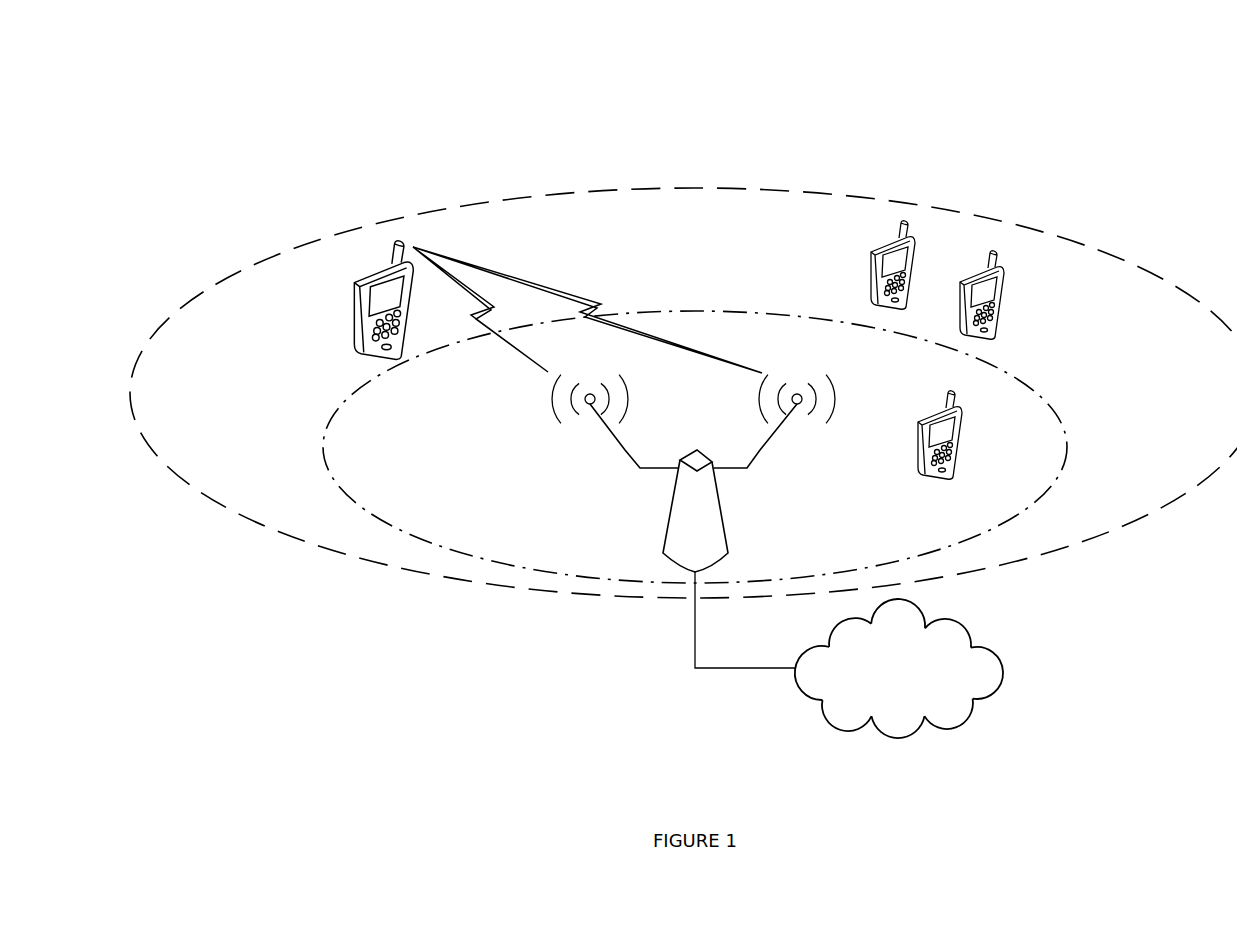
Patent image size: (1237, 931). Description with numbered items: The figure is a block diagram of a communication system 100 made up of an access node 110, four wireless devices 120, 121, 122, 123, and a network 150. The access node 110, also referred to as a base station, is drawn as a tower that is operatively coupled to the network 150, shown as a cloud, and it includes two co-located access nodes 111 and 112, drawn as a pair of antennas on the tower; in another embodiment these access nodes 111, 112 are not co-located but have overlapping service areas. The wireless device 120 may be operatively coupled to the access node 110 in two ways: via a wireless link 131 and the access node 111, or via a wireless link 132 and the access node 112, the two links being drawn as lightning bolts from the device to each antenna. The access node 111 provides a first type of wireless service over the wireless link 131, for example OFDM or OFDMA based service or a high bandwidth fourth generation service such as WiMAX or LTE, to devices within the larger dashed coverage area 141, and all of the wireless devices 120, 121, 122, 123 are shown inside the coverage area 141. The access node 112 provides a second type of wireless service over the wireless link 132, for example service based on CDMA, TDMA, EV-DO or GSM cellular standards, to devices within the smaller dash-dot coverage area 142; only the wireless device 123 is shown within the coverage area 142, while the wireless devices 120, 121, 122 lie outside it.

The communication system 100 is at (1171, 90).
The access node 110 is at (668, 523).
The access node 111 is at (625, 455).
The access node 112 is at (763, 456).
The wireless device 120 is at (367, 362).
The wireless device 121 is at (870, 282).
The wireless device 122 is at (960, 307).
The wireless device 123 is at (920, 467).
The wireless link 131 is at (510, 342).
The wireless link 132 is at (583, 298).
The coverage area 141 is at (182, 307).
The coverage area 142 is at (327, 440).
The network 150 is at (917, 691).